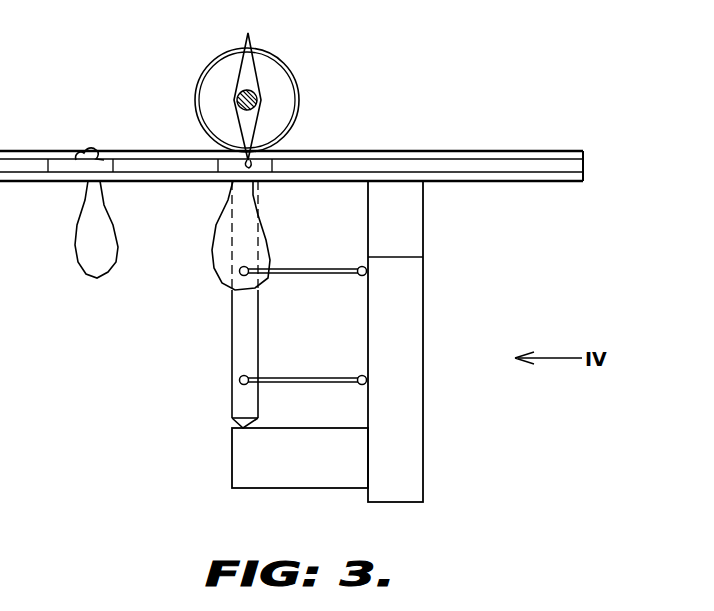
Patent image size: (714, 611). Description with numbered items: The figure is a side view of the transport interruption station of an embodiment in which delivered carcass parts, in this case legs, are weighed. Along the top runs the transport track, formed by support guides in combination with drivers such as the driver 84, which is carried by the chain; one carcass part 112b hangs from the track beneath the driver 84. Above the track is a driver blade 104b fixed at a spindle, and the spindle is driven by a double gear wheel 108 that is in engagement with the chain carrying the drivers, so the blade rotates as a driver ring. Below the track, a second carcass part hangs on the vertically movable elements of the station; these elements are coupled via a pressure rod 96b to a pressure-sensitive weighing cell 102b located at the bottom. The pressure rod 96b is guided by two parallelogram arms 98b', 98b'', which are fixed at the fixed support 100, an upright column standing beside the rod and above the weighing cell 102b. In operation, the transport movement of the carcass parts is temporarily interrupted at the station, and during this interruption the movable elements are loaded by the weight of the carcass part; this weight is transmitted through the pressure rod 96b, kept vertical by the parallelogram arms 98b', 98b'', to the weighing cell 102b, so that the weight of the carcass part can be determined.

The driver 84 is at (107, 157).
The carcass part 112b is at (98, 257).
The double gear wheel 108 is at (287, 105).
The driver blade 104b is at (250, 70).
The pressure rod 96b is at (243, 338).
The parallelogram arm 98b' is at (303, 246).
The parallelogram arm 98b'' is at (303, 353).
The fixed support 100 is at (413, 318).
The weighing cell 102b is at (292, 470).